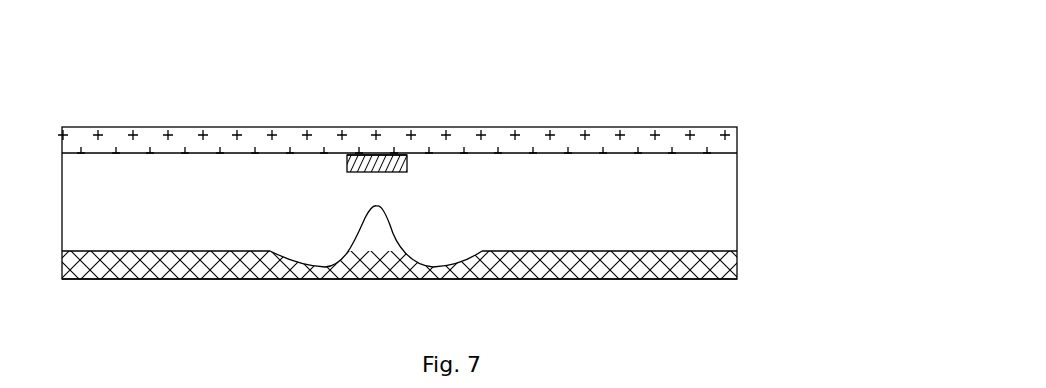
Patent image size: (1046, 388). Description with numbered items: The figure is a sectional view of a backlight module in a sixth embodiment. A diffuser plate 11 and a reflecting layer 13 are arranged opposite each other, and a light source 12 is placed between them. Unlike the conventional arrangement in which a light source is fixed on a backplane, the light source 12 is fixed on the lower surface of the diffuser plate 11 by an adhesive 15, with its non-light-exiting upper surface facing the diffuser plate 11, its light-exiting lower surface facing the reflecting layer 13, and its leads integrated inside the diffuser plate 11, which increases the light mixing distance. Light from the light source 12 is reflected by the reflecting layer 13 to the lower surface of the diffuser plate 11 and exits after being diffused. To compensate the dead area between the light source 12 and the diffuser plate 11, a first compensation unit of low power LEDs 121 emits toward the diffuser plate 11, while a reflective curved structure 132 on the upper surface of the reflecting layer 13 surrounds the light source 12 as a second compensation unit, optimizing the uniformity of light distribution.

The diffuser plate 11 is at (737, 144).
The light source 12 is at (408, 160).
The low power LEDs 121 is at (388, 155).
The reflecting layer 13 is at (737, 264).
The reflective curved structure 132 is at (350, 248).
The adhesive 15 is at (347, 154).